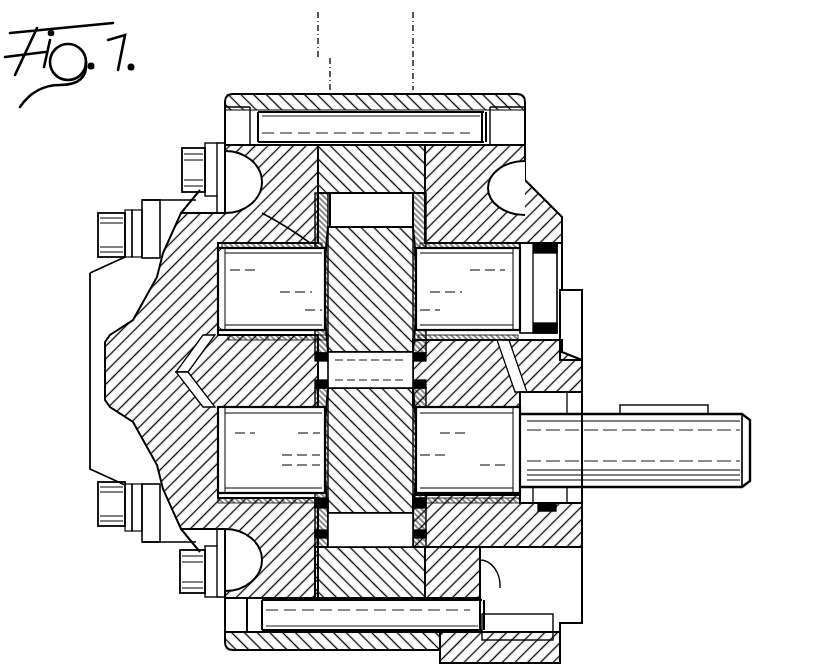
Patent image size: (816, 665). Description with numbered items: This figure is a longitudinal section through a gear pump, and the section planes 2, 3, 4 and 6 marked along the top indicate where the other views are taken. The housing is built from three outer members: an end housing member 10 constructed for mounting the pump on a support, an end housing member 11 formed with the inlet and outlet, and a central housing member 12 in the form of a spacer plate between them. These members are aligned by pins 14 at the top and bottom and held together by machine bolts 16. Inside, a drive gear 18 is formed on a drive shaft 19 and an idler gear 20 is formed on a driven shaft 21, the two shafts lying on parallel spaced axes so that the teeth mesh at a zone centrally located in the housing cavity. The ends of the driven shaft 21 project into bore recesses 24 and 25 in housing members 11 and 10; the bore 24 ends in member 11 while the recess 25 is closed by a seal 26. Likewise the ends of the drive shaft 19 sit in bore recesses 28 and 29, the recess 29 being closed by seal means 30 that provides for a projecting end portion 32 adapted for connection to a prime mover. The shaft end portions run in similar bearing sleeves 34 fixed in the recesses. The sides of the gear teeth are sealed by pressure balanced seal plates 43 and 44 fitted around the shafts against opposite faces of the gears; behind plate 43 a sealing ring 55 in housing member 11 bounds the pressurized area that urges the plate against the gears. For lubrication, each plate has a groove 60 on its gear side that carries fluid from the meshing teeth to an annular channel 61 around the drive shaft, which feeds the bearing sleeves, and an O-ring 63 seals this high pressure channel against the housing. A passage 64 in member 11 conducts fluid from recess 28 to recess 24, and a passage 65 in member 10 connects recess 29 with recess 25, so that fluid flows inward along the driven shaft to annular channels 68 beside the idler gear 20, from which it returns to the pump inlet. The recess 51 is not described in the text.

The section plane 2 is at (419, 30).
The section plane 3 is at (336, 78).
The section plane 4 is at (312, 25).
The section plane 6 is at (324, 35).
The end housing member 10 is at (572, 208).
The end housing member 11 is at (98, 353).
The central housing member 12 is at (418, 90).
The pins 14 is at (460, 123).
The machine bolts 16 is at (158, 168).
The drive gear 18 is at (385, 550).
The drive shaft 19 is at (757, 437).
The idler gear 20 is at (373, 196).
The driven shaft 21 is at (536, 299).
The bore recess 24 is at (197, 287).
The bore recess 25 is at (557, 247).
The seal 26 is at (530, 263).
The bore recess 28 is at (200, 440).
The bore recess 29 is at (568, 503).
The seal means 30 is at (537, 498).
The projecting end portion 32 is at (718, 430).
The bearing sleeves 34 is at (500, 218).
The pressure balanced seal plate 43 is at (347, 273).
The pressure balanced seal plate 44 is at (440, 273).
The recess 51 is at (315, 177).
The sealing ring 55 is at (242, 289).
The groove 60 is at (400, 397).
The annular channel 61 is at (427, 420).
The O-ring 63 is at (400, 524).
The passage 64 is at (200, 378).
The passage 65 is at (520, 383).
The annular channel 68 is at (317, 333).